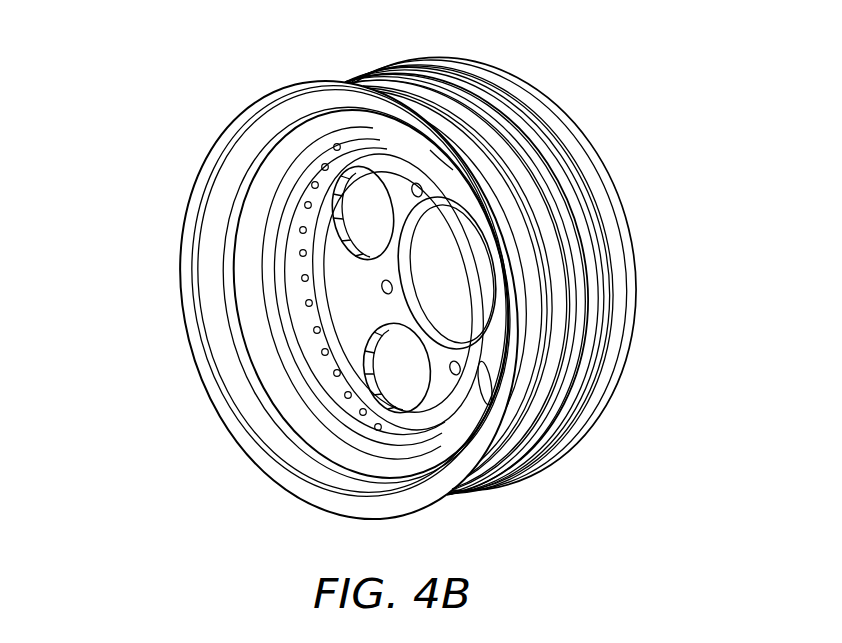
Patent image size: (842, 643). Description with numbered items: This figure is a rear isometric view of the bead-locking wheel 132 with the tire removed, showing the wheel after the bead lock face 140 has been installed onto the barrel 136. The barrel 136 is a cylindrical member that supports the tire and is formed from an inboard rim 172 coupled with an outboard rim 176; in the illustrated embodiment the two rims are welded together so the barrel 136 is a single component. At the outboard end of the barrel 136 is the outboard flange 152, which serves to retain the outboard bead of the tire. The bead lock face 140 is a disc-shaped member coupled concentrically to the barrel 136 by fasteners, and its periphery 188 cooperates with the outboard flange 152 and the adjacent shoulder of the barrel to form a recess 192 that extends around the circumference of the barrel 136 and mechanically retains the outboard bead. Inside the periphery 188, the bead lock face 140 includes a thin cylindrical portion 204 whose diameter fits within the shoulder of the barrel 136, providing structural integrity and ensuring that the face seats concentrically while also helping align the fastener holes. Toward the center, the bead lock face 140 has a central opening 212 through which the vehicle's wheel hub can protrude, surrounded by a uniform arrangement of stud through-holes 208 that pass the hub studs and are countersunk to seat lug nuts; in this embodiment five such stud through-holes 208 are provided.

The bead-locking wheel 132 is at (230, 83).
The barrel 136 is at (180, 241).
The bead lock face 140 is at (648, 251).
The outboard flange 152 is at (537, 113).
The inboard rim 172 is at (273, 440).
The outboard rim 176 is at (423, 92).
The periphery 188 is at (587, 153).
The recess 192 is at (617, 303).
The cylindrical portion 204 is at (352, 305).
The stud through-holes 208 is at (418, 198).
The central opening 212 is at (440, 333).